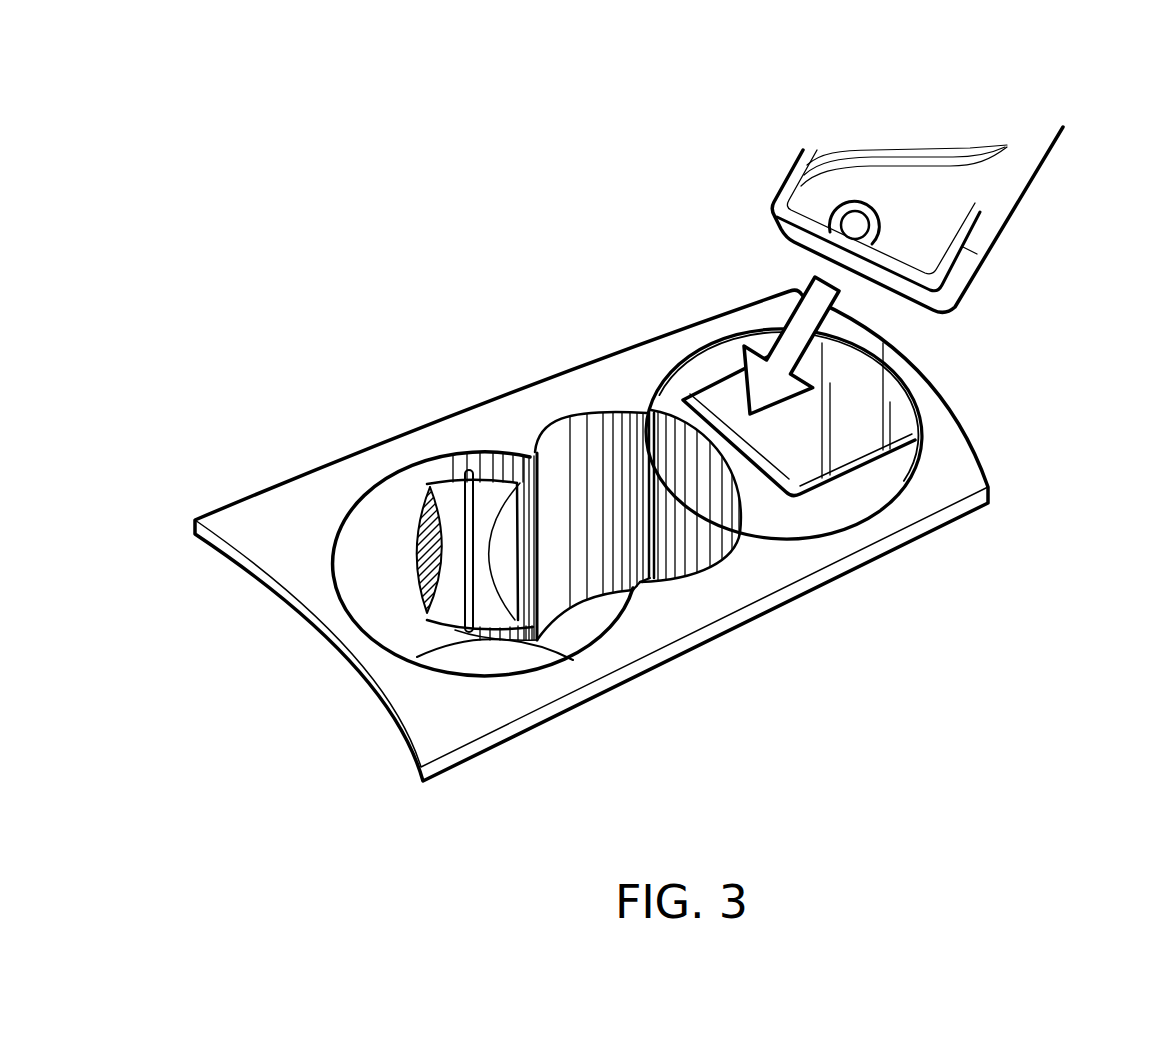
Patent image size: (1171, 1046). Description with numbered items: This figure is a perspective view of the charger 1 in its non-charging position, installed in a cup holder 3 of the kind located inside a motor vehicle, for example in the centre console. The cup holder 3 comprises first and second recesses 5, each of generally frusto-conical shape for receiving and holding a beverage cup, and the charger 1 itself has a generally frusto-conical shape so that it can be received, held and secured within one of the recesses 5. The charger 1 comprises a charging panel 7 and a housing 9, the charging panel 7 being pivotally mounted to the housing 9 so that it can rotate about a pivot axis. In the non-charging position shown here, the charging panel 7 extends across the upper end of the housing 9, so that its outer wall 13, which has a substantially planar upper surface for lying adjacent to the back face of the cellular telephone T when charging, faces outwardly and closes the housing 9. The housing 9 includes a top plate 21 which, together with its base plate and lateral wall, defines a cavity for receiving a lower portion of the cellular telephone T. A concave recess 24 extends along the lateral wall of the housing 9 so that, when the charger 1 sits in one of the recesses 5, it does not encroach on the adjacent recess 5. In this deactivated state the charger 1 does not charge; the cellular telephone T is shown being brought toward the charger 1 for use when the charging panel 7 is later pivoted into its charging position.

The charger 1 is at (695, 360).
The cup holder 3 is at (420, 418).
The recesses 5 is at (370, 541).
The charging panel 7 is at (863, 428).
The housing 9 is at (693, 477).
The outer wall 13 is at (858, 403).
The top plate 21 is at (875, 483).
The concave recess 24 is at (687, 530).
The cellular telephone T is at (863, 143).